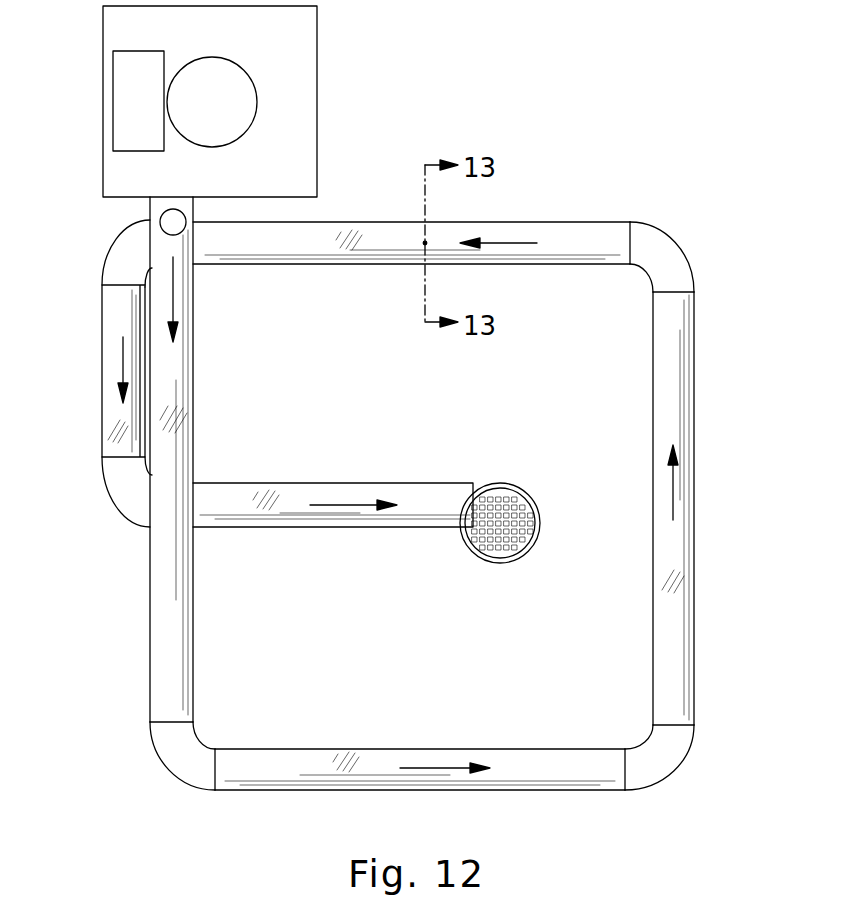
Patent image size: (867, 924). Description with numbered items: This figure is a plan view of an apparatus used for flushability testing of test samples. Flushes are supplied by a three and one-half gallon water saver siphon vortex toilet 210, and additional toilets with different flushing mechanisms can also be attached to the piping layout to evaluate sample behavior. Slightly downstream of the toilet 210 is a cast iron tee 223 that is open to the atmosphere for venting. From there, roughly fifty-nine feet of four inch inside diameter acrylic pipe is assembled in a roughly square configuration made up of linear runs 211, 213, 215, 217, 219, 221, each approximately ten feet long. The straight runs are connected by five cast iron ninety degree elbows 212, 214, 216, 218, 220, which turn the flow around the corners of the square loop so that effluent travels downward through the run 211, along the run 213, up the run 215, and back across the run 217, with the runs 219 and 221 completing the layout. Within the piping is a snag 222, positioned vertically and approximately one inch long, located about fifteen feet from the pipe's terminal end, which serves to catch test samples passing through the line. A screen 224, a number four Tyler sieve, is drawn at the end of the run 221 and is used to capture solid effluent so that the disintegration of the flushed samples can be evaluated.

The water saver siphon vortex toilet 210 is at (249, 89).
The linear run 211 is at (158, 591).
The cast iron ninety degree elbow 212 is at (178, 760).
The linear run 213 is at (420, 779).
The cast iron ninety degree elbow 214 is at (660, 765).
The linear run 215 is at (683, 500).
The cast iron ninety degree elbow 216 is at (668, 255).
The linear run 217 is at (498, 230).
The cast iron ninety degree elbow 218 is at (125, 249).
The linear run 219 is at (112, 326).
The cast iron ninety degree elbow 220 is at (130, 500).
The linear run 221 is at (348, 490).
The snag 222 is at (422, 247).
The cast iron tee 223 is at (160, 221).
The filter 224 is at (525, 488).